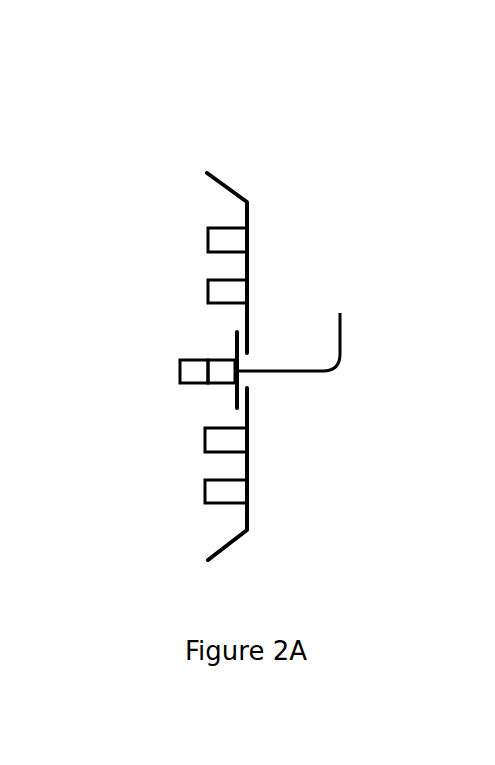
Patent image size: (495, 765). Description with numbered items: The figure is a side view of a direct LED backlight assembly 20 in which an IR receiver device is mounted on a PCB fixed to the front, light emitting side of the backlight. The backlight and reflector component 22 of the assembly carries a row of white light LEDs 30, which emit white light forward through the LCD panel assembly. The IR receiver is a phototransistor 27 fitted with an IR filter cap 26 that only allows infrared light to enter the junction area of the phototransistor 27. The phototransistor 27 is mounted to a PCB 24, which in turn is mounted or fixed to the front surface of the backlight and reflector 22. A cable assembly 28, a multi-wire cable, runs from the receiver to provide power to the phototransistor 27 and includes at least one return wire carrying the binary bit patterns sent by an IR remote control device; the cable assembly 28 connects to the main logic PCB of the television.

The direct LED backlight assembly 20 is at (252, 72).
The backlight and reflector component 22 is at (264, 210).
The PCB 24 is at (218, 398).
The IR filter cap 26 is at (164, 366).
The phototransistor 27 is at (219, 342).
The cable assembly 28 is at (354, 337).
The white light LEDs 30 is at (190, 284).